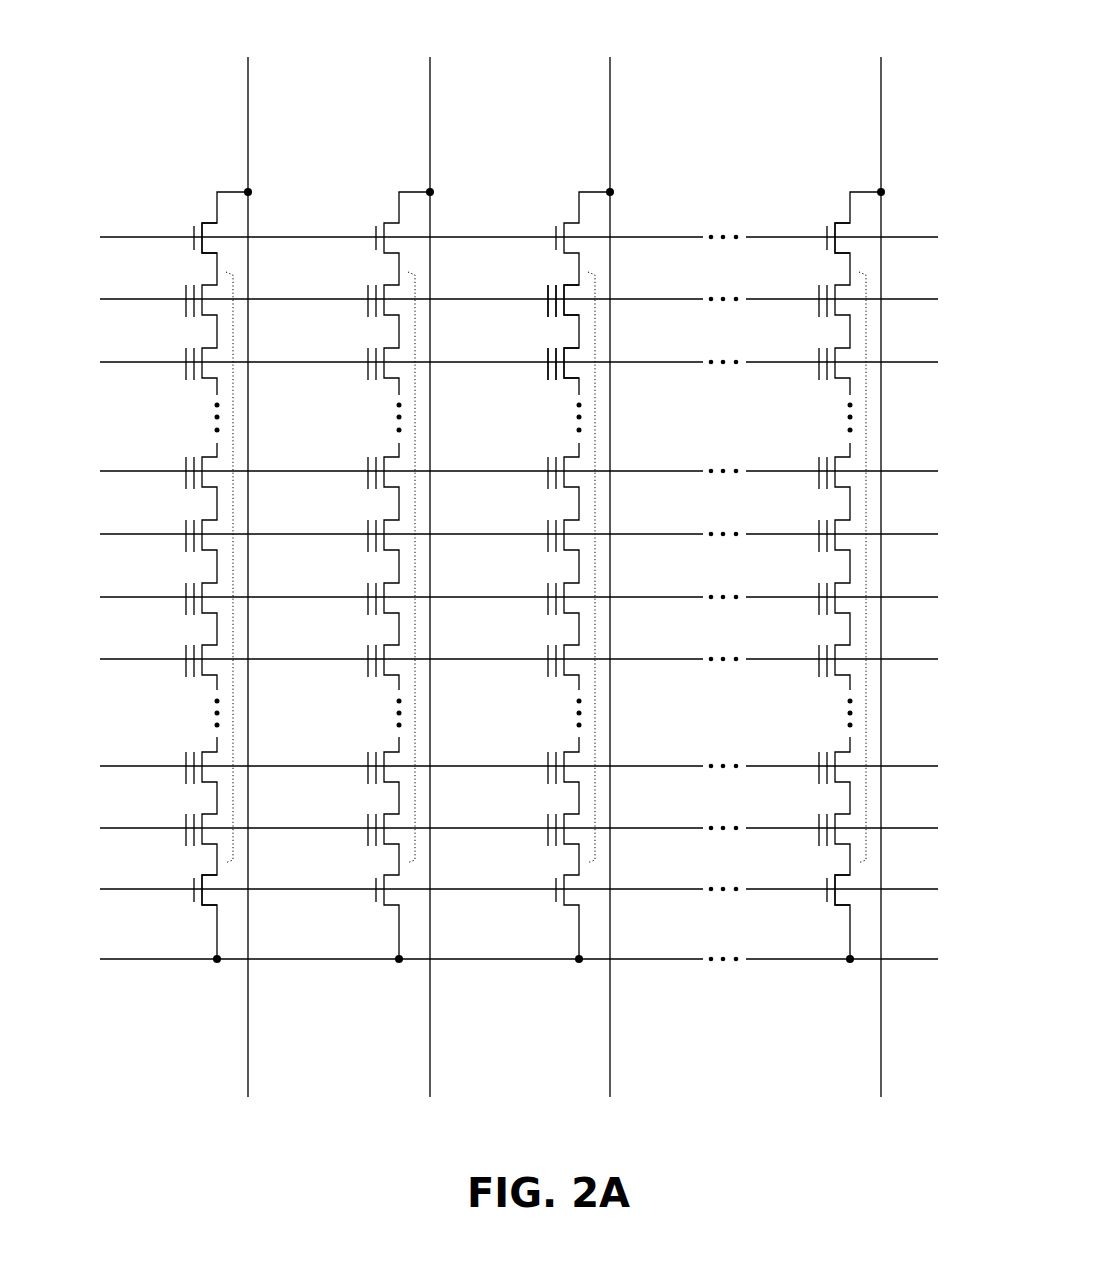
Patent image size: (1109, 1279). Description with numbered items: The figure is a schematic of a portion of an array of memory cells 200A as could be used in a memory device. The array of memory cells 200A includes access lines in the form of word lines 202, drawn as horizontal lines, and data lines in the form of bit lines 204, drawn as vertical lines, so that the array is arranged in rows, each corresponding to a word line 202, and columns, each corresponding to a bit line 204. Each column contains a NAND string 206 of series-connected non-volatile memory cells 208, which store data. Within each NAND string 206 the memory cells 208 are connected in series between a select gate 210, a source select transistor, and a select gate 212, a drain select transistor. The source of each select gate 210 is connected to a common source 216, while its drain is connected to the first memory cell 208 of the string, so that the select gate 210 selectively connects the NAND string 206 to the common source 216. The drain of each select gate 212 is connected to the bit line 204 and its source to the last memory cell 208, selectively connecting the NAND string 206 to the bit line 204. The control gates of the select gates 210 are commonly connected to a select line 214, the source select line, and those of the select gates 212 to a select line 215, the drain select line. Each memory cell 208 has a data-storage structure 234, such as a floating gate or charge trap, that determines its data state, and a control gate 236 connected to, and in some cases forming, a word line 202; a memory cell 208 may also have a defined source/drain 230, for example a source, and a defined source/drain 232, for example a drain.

The array of memory cells 200A is at (784, 50).
The word line 202 is at (150, 297).
The bit line 204 is at (249, 110).
The NAND string 206 is at (236, 573).
The memory cell 208 is at (202, 318).
The select gate 210 is at (205, 906).
The select gate 212 is at (204, 221).
The select line 214 is at (772, 888).
The select line 215 is at (785, 236).
The common source 216 is at (170, 961).
The source/drain 230 is at (584, 350).
The source/drain 232 is at (584, 288).
The data-storage structure 234 is at (550, 290).
The control gate 236 is at (550, 352).